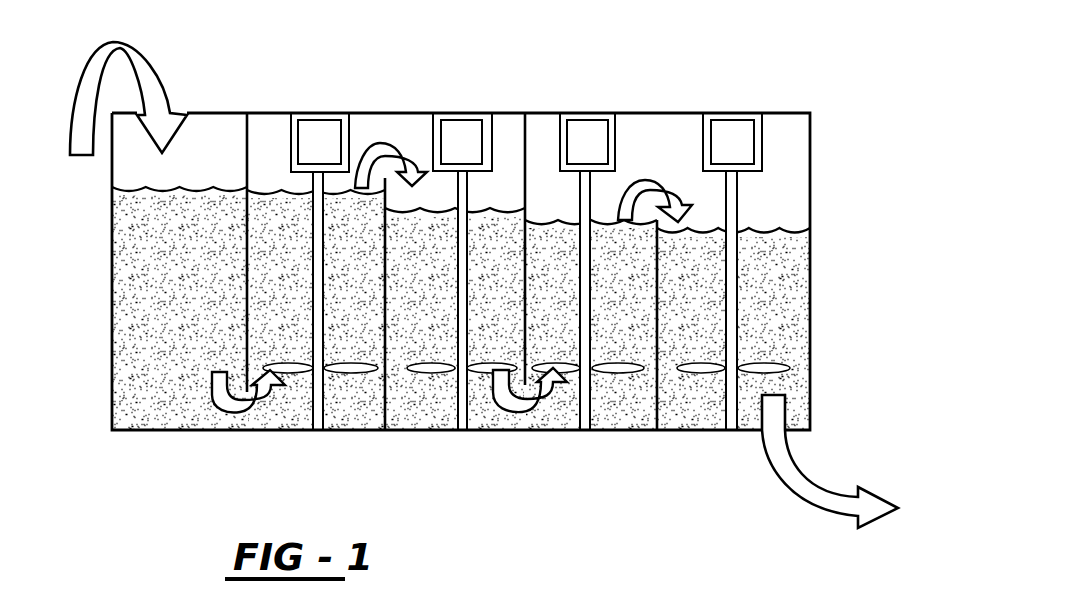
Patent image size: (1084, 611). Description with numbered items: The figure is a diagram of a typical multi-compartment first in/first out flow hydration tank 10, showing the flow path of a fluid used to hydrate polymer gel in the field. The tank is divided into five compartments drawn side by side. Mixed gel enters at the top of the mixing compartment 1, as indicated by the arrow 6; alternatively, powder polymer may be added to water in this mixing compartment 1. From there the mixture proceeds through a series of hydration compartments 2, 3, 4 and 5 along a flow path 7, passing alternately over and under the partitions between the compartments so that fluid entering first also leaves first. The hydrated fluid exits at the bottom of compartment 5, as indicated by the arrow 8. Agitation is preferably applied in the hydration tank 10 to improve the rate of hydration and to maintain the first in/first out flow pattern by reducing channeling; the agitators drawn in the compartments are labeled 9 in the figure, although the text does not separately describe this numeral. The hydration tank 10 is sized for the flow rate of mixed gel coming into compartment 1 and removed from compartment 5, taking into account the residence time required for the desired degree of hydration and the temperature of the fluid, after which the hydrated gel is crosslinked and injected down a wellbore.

The mixing compartment 1 is at (179, 271).
The hydration compartment 2 is at (316, 304).
The hydration compartment 3 is at (455, 271).
The hydration compartment 4 is at (591, 325).
The hydration compartment 5 is at (733, 328).
The arrow 6 is at (167, 87).
The flow path 7 is at (410, 147).
The arrow 8 is at (840, 503).
The agitator shafts with motors 9 is at (320, 405).
The hydration tank 10 is at (485, 267).